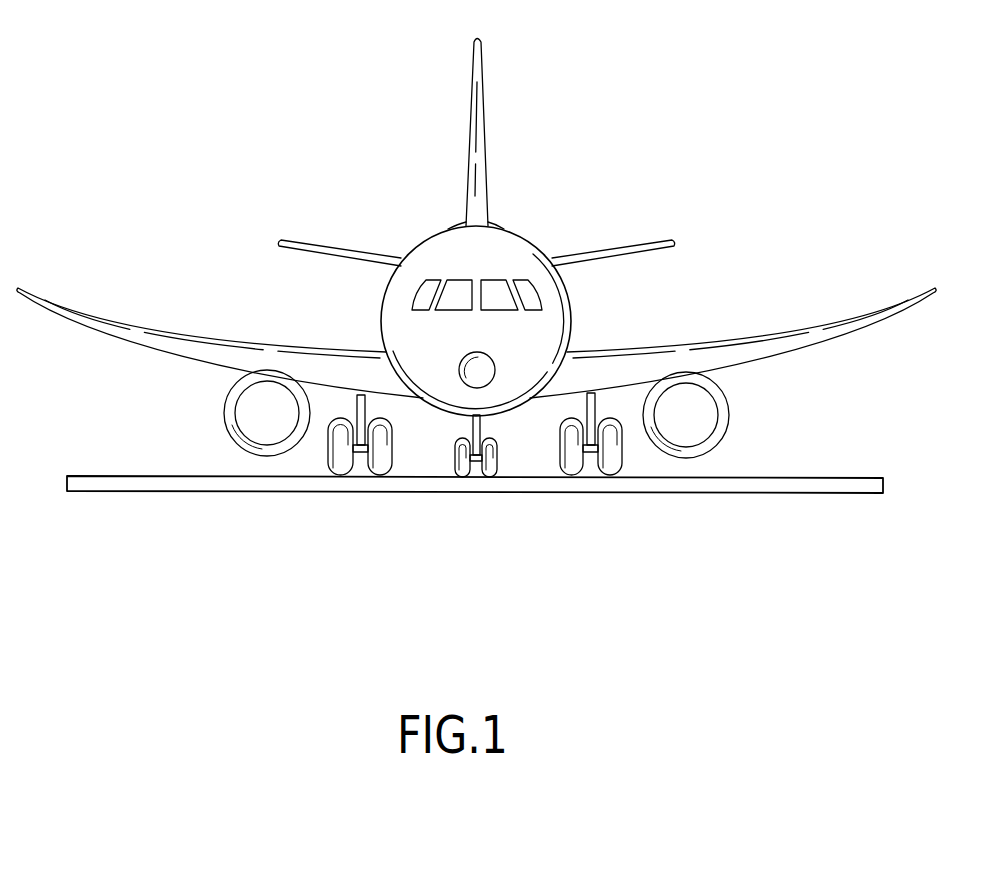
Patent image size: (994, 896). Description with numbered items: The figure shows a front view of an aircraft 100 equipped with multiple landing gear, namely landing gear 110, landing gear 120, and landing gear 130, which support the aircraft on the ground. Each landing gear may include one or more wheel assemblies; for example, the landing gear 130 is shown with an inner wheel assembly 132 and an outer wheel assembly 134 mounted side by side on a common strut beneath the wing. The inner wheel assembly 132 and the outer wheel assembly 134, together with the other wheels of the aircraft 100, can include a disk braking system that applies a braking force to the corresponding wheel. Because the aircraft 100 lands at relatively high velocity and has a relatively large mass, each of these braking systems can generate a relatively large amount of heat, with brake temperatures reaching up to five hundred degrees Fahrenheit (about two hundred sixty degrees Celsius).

The aircraft 100 is at (315, 135).
The landing gear 110 is at (623, 465).
The landing gear 120 is at (500, 458).
The landing gear 130 is at (322, 456).
The inner wheel assembly 132 is at (390, 470).
The outer wheel assembly 134 is at (345, 475).